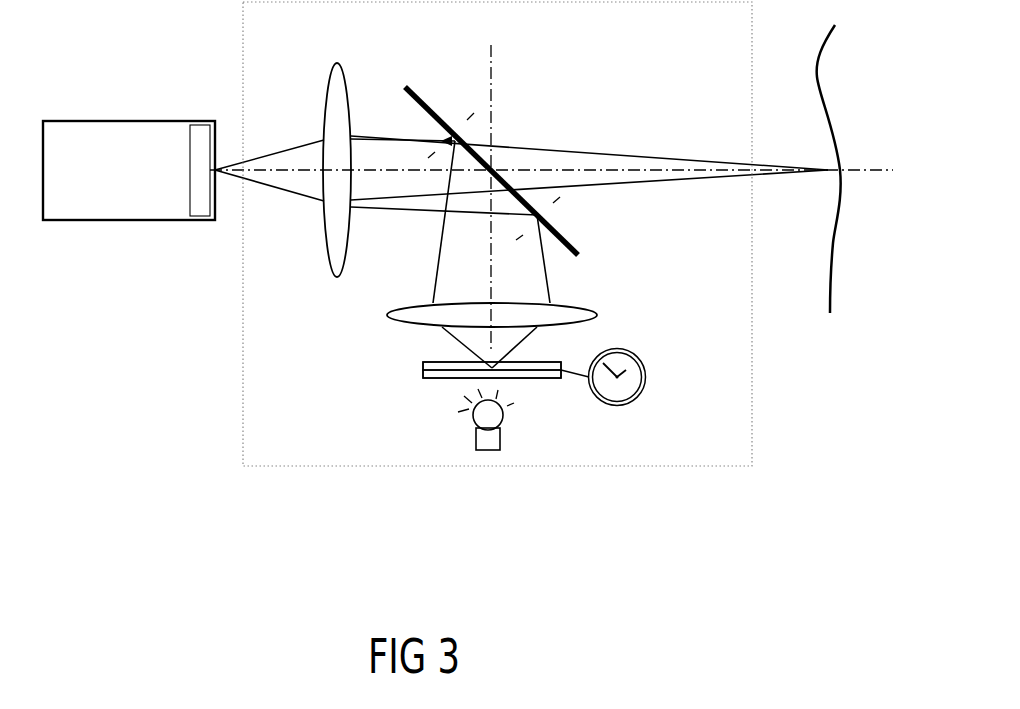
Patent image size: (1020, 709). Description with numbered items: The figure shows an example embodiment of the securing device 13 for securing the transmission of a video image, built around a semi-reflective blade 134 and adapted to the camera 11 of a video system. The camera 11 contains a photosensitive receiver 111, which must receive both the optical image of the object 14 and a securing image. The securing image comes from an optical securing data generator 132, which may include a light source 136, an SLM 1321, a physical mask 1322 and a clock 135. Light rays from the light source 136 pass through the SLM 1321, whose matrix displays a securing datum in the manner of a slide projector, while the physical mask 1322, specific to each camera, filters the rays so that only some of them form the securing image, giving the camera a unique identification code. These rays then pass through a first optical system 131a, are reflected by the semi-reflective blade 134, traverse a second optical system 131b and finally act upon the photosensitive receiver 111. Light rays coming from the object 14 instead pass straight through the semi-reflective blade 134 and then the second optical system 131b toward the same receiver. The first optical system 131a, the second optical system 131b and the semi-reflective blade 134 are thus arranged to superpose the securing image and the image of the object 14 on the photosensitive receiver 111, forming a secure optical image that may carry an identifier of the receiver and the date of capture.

The camera 11 is at (129, 170).
The photosensitive receiver 111 is at (200, 122).
The securing device 13 is at (248, 42).
The first optical system 131a is at (410, 322).
The second optical system 131b is at (345, 70).
The optical securing data generator 132 is at (522, 379).
The SLM 1321 is at (427, 381).
The physical mask 1322 is at (558, 362).
The semi-reflective blade 134 is at (580, 257).
The clock 135 is at (647, 368).
The light source 136 is at (498, 443).
The object 14 is at (820, 80).